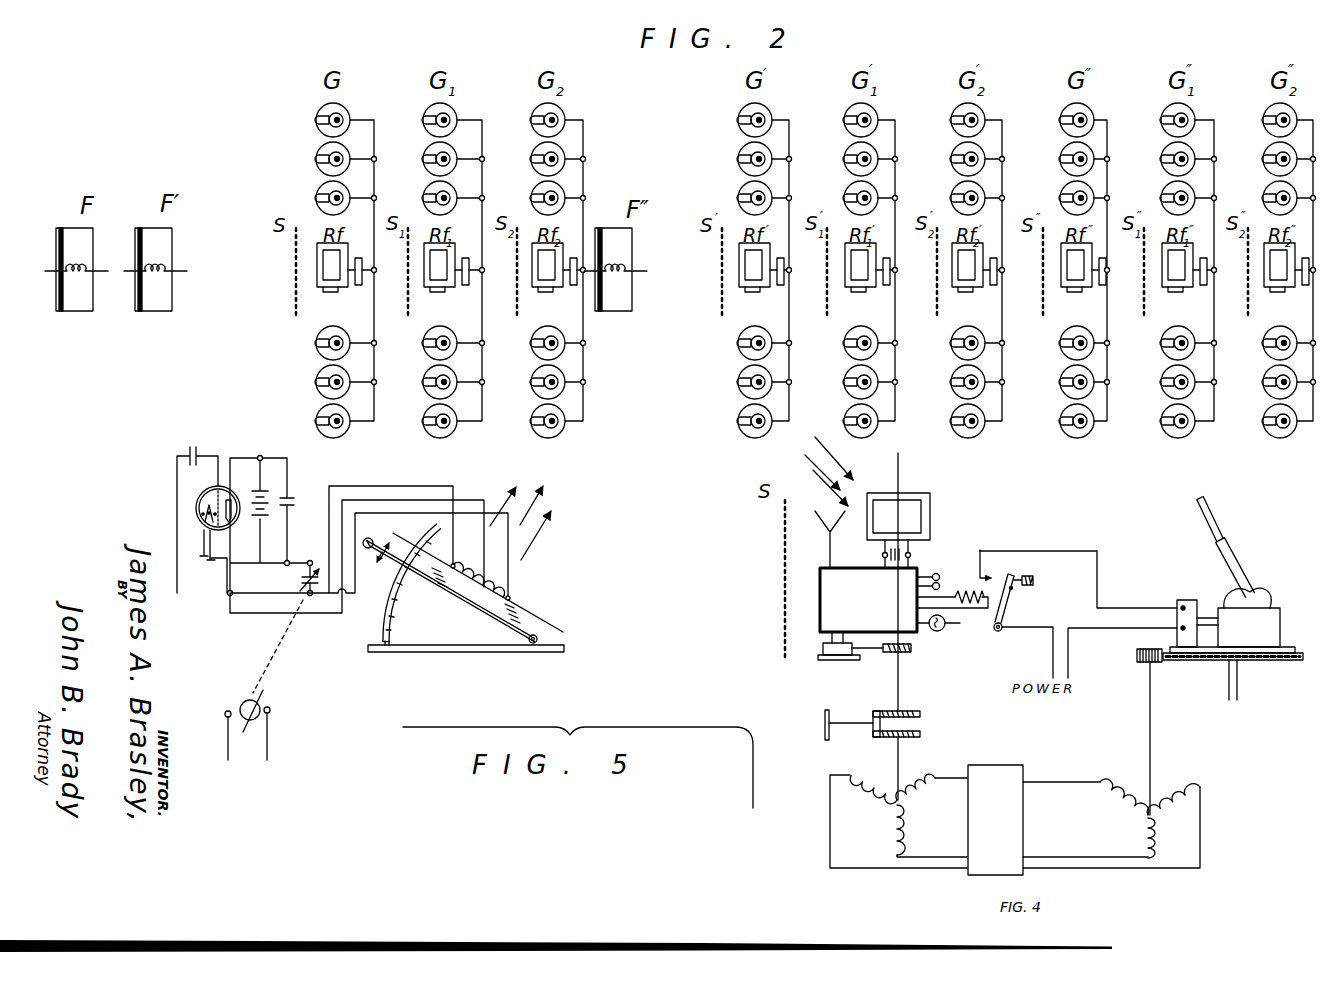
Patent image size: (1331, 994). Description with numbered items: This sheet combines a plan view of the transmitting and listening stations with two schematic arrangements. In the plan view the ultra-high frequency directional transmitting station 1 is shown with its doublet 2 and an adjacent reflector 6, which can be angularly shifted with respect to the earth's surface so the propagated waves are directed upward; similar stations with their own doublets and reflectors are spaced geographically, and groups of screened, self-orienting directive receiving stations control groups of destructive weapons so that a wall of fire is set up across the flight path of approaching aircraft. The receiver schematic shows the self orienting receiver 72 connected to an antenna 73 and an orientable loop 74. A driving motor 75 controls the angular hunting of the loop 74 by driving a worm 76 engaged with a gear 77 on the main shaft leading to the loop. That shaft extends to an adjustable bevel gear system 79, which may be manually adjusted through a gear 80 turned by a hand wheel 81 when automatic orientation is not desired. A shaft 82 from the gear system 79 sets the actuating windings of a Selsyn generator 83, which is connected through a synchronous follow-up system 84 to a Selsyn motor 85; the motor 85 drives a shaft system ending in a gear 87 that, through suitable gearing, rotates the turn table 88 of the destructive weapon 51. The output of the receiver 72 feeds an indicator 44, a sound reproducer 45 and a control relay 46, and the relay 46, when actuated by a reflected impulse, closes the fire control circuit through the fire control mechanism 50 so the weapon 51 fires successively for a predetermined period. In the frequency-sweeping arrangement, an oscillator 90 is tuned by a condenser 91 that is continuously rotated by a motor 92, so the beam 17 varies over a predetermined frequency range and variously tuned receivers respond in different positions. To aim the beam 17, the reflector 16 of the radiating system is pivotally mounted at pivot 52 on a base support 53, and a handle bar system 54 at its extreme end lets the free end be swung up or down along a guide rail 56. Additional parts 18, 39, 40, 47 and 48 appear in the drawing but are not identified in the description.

In FIG. 2, the transmitting station 1 is at (75, 253).
In FIG. 2, the doublet 2 is at (106, 289).
In FIG. 2, the reflector 6 is at (95, 225).
In FIG. 5, the reflector 16 is at (423, 578).
In FIG. 5, the beam 17 is at (547, 502).
In FIG. 5, the lever 18 is at (545, 613).
In FIG. 5, the coil 39 is at (500, 585).
In FIG. 5, the springs 40 is at (448, 587).
In FIG. 4, the indicator 44 is at (946, 625).
In FIG. 4, the sound reproducer 45 is at (934, 573).
In FIG. 4, the control relay 46 is at (968, 587).
In FIG. 4, the lever arm 47 is at (1008, 603).
In FIG. 4, the contact 48 is at (995, 576).
In FIG. 4, the fire control mechanism 50 is at (1190, 598).
In FIG. 4, the destructive weapon 51 is at (1258, 578).
In FIG. 5, the pivot 52 is at (540, 642).
In FIG. 5, the base support 53 is at (450, 654).
In FIG. 5, the handle bar system 54 is at (368, 550).
In FIG. 5, the guide rail 56 is at (382, 648).
In FIG. 4, the self orienting receiver 72 is at (832, 588).
In FIG. 4, the antenna 73 is at (827, 557).
In FIG. 4, the orientable loop 74 is at (915, 512).
In FIG. 4, the driving motor 75 is at (822, 650).
In FIG. 4, the worm 76 is at (903, 655).
In FIG. 4, the gear 77 is at (912, 649).
In FIG. 4, the adjustable bevel gear system 79 is at (908, 722).
In FIG. 4, the gear 80 is at (852, 757).
In FIG. 4, the hand wheel 81 is at (823, 722).
In FIG. 4, the shaft 82 is at (903, 762).
In FIG. 4, the Selsyn generator 83 is at (898, 821).
In FIG. 4, the synchronous follow-up system 84 is at (990, 773).
In FIG. 4, the Selsyn motor 85 is at (1163, 790).
In FIG. 4, the gear 87 is at (1152, 665).
In FIG. 4, the turn table 88 is at (1270, 665).
In FIG. 5, the oscillator 90 is at (220, 455).
In FIG. 5, the condenser 91 is at (305, 588).
In FIG. 5, the motor 92 is at (257, 703).